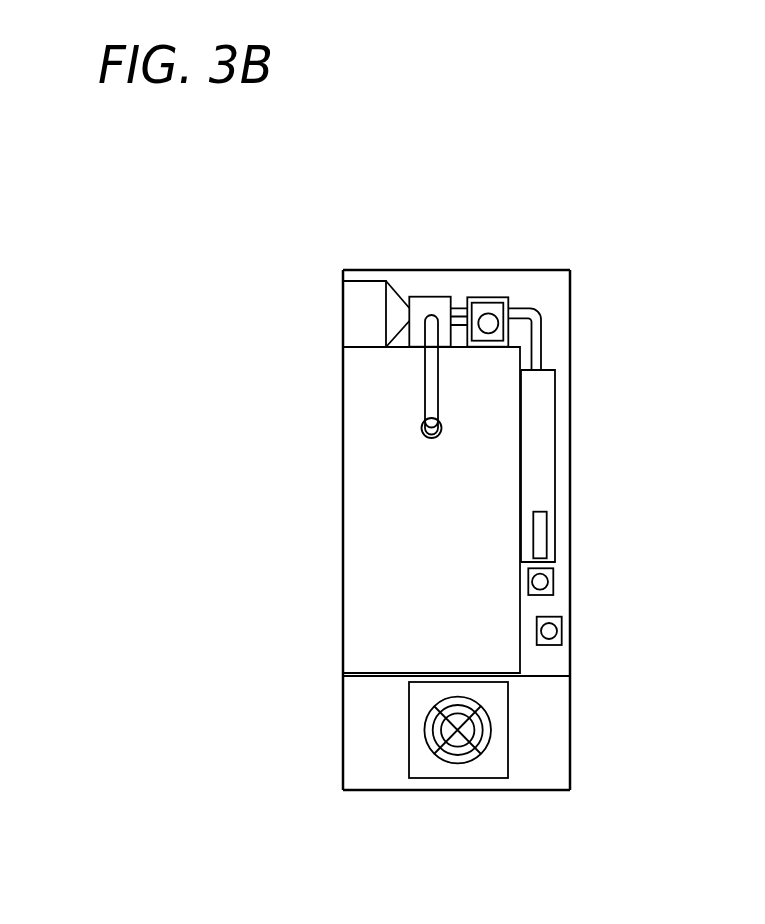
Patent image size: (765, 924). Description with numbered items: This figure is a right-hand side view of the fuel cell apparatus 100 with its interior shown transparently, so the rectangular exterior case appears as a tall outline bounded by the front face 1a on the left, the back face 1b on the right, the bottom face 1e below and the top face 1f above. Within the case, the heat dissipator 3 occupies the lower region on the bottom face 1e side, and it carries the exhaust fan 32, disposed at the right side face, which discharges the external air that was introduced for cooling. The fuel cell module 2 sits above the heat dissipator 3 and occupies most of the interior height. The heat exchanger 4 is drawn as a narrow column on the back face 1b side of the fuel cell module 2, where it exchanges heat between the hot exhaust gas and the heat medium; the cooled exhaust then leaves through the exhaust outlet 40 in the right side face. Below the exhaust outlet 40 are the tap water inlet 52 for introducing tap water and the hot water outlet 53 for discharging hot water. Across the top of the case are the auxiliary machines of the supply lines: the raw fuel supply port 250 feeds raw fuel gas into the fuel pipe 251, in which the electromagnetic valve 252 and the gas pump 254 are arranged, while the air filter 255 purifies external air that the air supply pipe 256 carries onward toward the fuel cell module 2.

The fuel cell apparatus 100 is at (288, 172).
The front face 1a is at (343, 412).
The back face 1b is at (570, 472).
The bottom face 1e is at (370, 791).
The top face 1f is at (553, 270).
The fuel cell module 2 is at (362, 513).
The heat dissipator 3 is at (363, 730).
The heat exchanger 4 is at (535, 437).
The exhaust fan 32 is at (458, 738).
The exhaust outlet 40 is at (540, 533).
The tap water inlet 52 is at (540, 582).
The hot water outlet 53 is at (549, 631).
The raw fuel supply port 250 is at (487, 325).
The fuel pipe 251 is at (432, 375).
The electromagnetic valve 252 is at (470, 325).
The gas pump 254 is at (428, 306).
The air filter 255 is at (365, 303).
The air supply pipe 256 is at (535, 337).